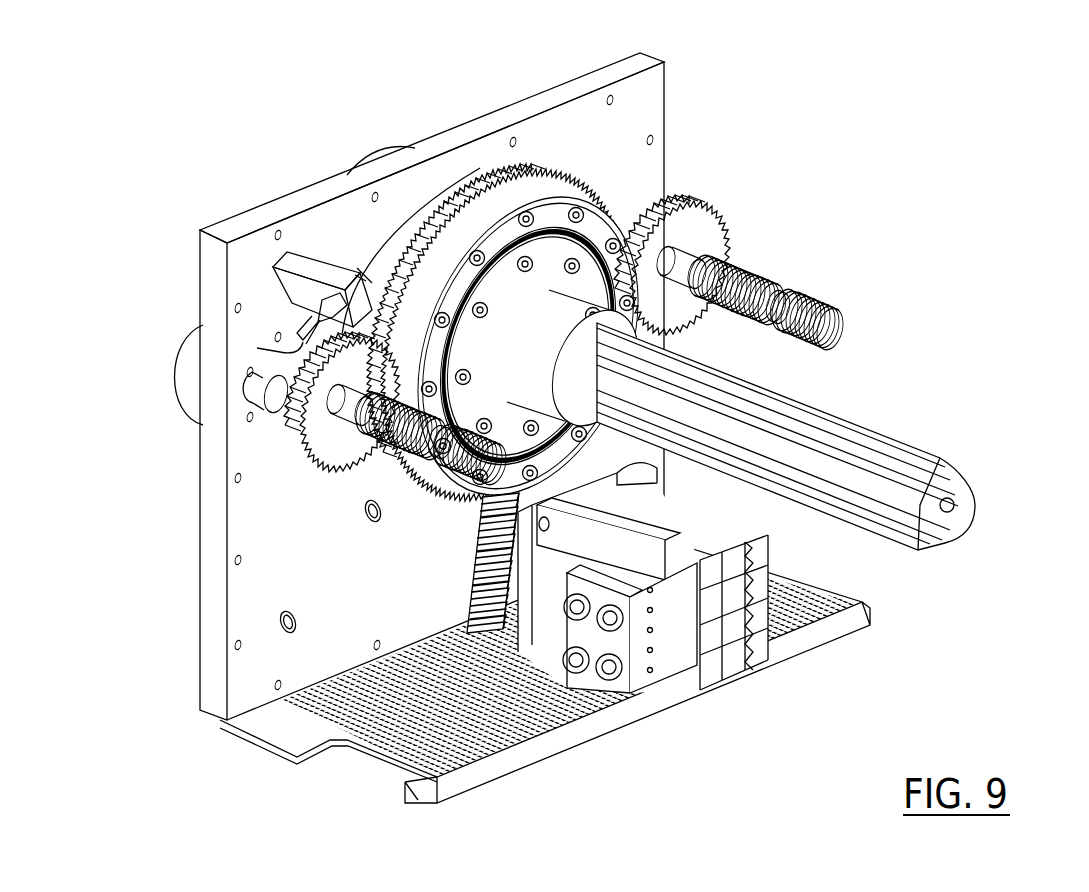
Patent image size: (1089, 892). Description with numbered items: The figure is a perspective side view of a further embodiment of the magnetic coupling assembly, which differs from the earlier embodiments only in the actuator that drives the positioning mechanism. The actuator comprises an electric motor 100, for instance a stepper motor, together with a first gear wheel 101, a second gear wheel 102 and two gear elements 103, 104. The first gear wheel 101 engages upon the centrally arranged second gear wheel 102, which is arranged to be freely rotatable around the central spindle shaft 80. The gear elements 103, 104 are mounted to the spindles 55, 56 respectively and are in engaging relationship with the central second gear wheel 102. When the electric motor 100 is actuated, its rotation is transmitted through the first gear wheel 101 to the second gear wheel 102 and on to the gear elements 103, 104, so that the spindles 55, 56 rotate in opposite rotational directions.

The second gear wheel 102 is at (540, 192).
The gear element 104 is at (702, 240).
The spindle 56 is at (825, 330).
The central spindle shaft 80 is at (900, 457).
The gear element 103 is at (327, 440).
The spindle 55 is at (490, 463).
The first gear wheel 101 is at (507, 573).
The electric motor 100 is at (677, 637).